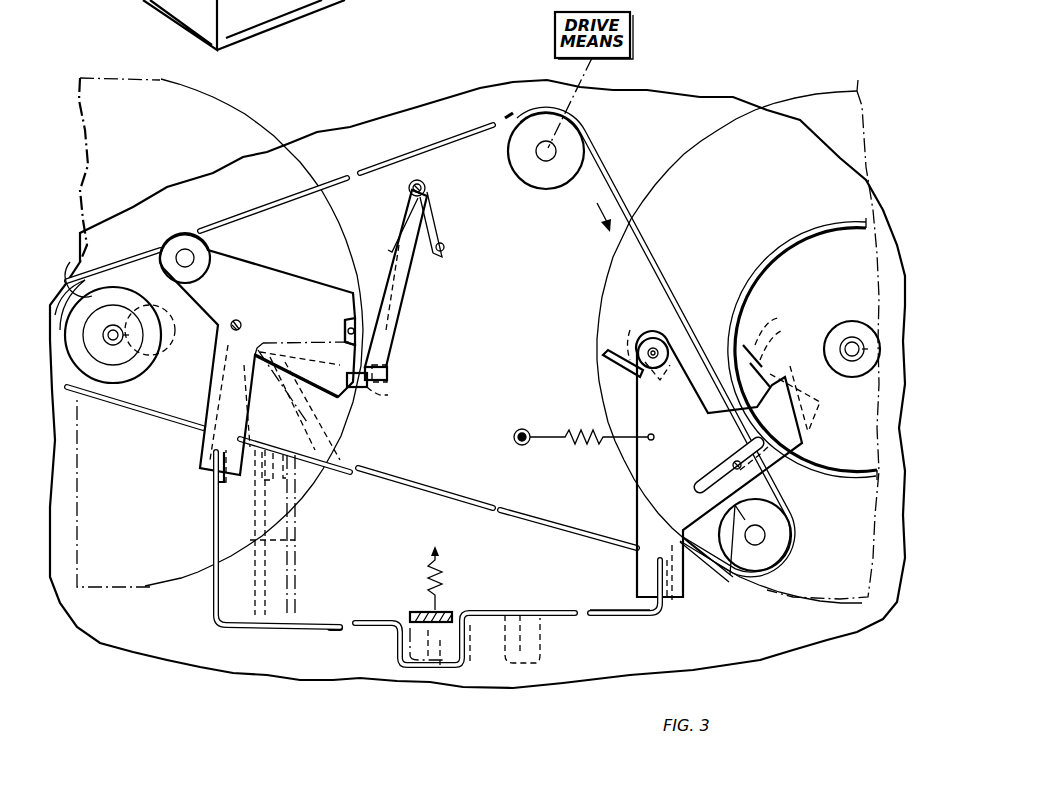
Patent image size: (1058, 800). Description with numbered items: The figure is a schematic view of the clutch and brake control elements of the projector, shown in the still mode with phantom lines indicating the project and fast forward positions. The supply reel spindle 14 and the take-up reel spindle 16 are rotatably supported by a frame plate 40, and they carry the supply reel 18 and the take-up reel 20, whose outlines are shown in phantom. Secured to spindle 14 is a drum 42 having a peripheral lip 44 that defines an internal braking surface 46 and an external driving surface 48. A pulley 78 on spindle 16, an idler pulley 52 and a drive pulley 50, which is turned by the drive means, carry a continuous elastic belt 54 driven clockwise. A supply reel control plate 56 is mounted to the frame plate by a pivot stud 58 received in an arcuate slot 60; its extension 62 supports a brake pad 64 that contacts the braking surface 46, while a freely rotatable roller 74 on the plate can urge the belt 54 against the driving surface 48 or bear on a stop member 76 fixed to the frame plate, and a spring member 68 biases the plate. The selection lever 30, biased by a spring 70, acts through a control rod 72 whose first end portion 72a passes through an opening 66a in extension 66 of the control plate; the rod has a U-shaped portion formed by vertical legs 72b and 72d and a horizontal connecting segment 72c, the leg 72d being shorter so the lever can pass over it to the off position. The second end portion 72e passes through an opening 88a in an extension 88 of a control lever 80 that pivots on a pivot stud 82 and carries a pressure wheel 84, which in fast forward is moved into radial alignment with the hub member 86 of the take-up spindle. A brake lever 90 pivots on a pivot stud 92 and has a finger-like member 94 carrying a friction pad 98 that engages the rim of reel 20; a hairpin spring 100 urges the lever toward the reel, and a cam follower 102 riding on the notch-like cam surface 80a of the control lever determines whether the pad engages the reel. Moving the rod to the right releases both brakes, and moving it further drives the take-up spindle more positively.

The film reel spindle 14 is at (850, 340).
The film reel spindle 16 is at (118, 340).
The film supply reel 18 is at (818, 112).
The take-up reel 20 is at (172, 565).
The selection lever 30 is at (416, 612).
The frame plate 40 is at (650, 126).
The drum 42 is at (845, 240).
The peripheral lip 44 is at (745, 292).
The braking surface 46 is at (795, 268).
The driving surface 48 is at (758, 268).
The drive pulley 50 is at (551, 178).
The idler pulley 52 is at (780, 545).
The elastic belt 54 is at (615, 190).
The supply reel control plate 56 is at (660, 463).
The pivot stud 58 is at (742, 452).
The arcuate slot 60 is at (730, 466).
The extension 62 is at (800, 425).
The brake pad 64 is at (778, 345).
The extension 66 is at (640, 580).
The opening 66a is at (640, 607).
The spring member 68 is at (595, 425).
The spring 70 is at (428, 568).
The control rod 72 is at (486, 600).
The first end portion 72a is at (665, 545).
The vertical leg 72b is at (538, 645).
The horizontal connecting segment 72c is at (440, 655).
The vertical leg 72d is at (398, 642).
The second end portion 72e is at (213, 502).
The roller 74 is at (663, 325).
The stop member 76 is at (603, 360).
The pulley 78 is at (82, 262).
The control lever 80 is at (280, 298).
The cam surface 80a is at (343, 300).
The pivot stud 82 is at (238, 321).
The pressure wheel 84 is at (180, 233).
The hub member 86 is at (55, 315).
The extension 88 is at (205, 455).
The opening 88a is at (238, 482).
The brake lever 90 is at (390, 276).
The pivot stud 92 is at (425, 186).
The finger-like member 94 is at (385, 367).
The friction pad 98 is at (370, 395).
The hairpin spring 100 is at (437, 235).
The cam follower 102 is at (356, 332).